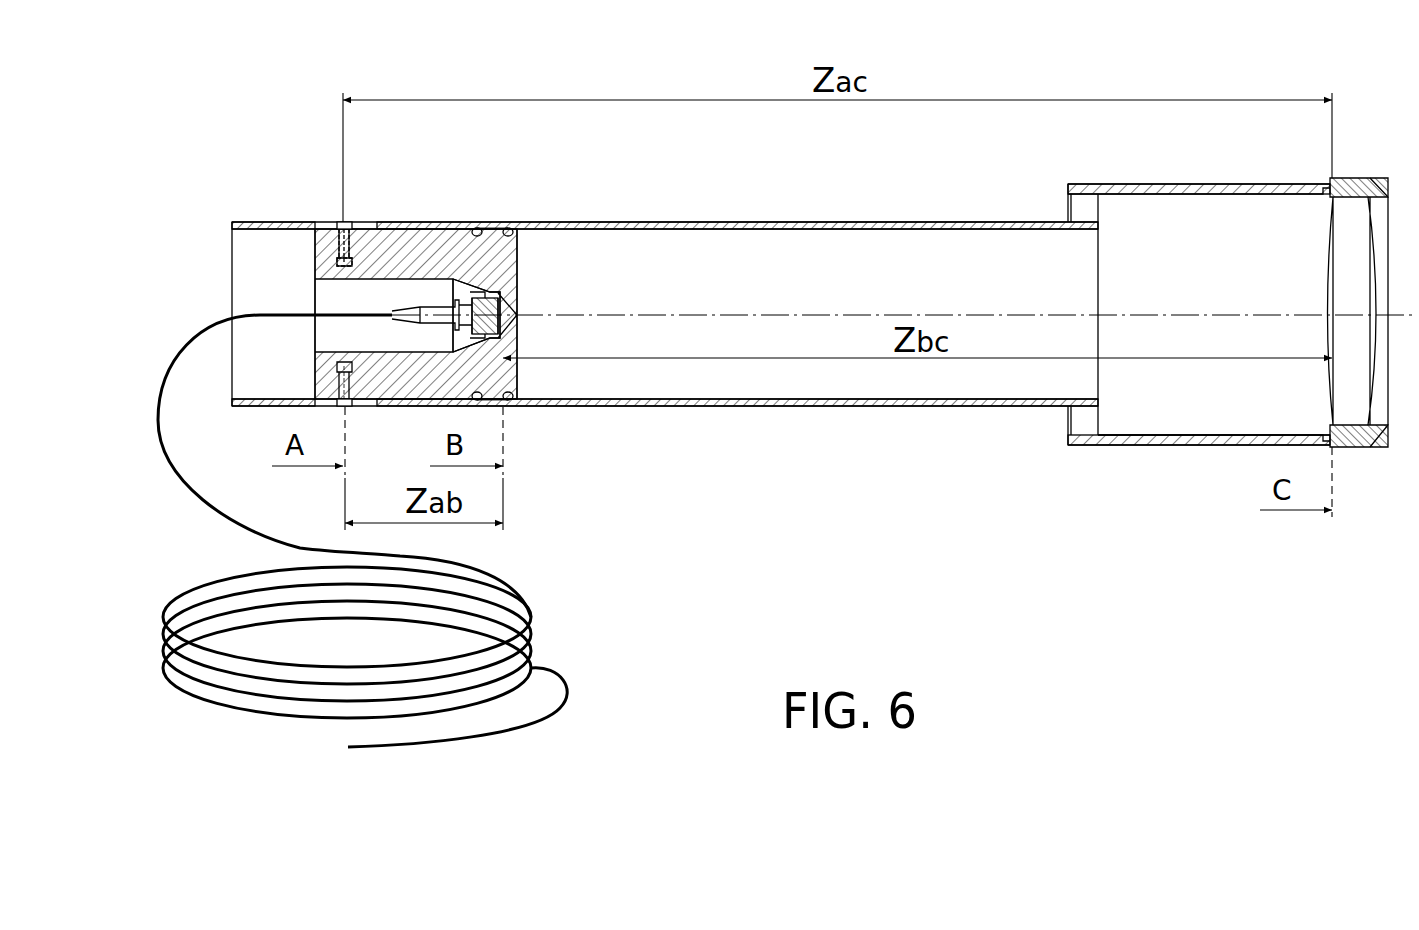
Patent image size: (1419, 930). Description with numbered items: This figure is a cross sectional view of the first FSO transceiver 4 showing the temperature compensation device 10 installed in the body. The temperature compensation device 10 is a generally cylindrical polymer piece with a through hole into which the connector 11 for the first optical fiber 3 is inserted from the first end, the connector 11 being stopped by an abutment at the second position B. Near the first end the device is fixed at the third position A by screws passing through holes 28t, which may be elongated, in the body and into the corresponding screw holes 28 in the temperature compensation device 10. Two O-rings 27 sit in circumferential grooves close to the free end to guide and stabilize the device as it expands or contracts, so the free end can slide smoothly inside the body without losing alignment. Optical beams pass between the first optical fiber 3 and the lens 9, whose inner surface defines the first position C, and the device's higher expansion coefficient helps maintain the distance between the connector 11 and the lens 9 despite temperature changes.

The first optical fiber 3 is at (180, 343).
The first FSO transceiver 4 is at (838, 433).
The lens 9 is at (1348, 365).
The temperature compensation device 10 is at (410, 229).
The connector 11 is at (430, 302).
The O-rings 27 is at (510, 229).
The screw holes 28 is at (345, 258).
The holes 28t is at (330, 225).